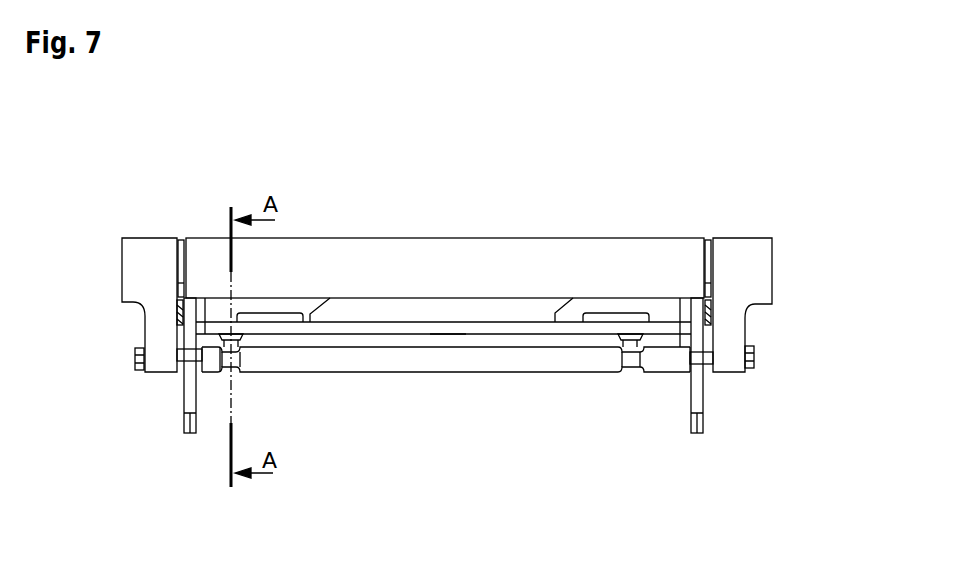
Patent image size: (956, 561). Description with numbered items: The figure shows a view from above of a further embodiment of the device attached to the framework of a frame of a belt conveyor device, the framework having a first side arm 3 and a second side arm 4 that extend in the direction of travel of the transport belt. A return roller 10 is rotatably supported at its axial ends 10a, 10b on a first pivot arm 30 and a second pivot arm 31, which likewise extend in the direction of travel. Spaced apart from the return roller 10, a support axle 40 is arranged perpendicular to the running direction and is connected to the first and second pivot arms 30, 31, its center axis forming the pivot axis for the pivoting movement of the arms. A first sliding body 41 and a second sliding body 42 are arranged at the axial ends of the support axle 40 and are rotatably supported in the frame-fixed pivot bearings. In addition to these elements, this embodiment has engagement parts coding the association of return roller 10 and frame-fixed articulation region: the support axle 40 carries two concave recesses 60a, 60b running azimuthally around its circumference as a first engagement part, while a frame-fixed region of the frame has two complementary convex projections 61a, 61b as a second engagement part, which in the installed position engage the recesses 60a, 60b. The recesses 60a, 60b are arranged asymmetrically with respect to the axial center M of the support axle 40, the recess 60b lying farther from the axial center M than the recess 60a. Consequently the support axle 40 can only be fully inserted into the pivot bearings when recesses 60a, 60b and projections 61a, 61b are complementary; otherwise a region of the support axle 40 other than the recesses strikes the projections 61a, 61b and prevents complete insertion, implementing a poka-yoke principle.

The first side arm 3 is at (698, 437).
The second side arm 4 is at (188, 423).
The return roller 10 is at (522, 260).
The axial end of the return roller 10a is at (707, 245).
The axial end of the return roller 10b is at (188, 245).
The first pivot arm 30 is at (758, 263).
The second pivot arm 31 is at (148, 252).
The support axle 40 is at (530, 372).
The first sliding body 41 is at (712, 352).
The second sliding body 42 is at (175, 352).
The concave recess 60a is at (633, 372).
The concave recess 60b is at (233, 372).
The convex projection 61a is at (630, 337).
The convex projection 61b is at (240, 333).
The axial center of the support axle M is at (448, 346).